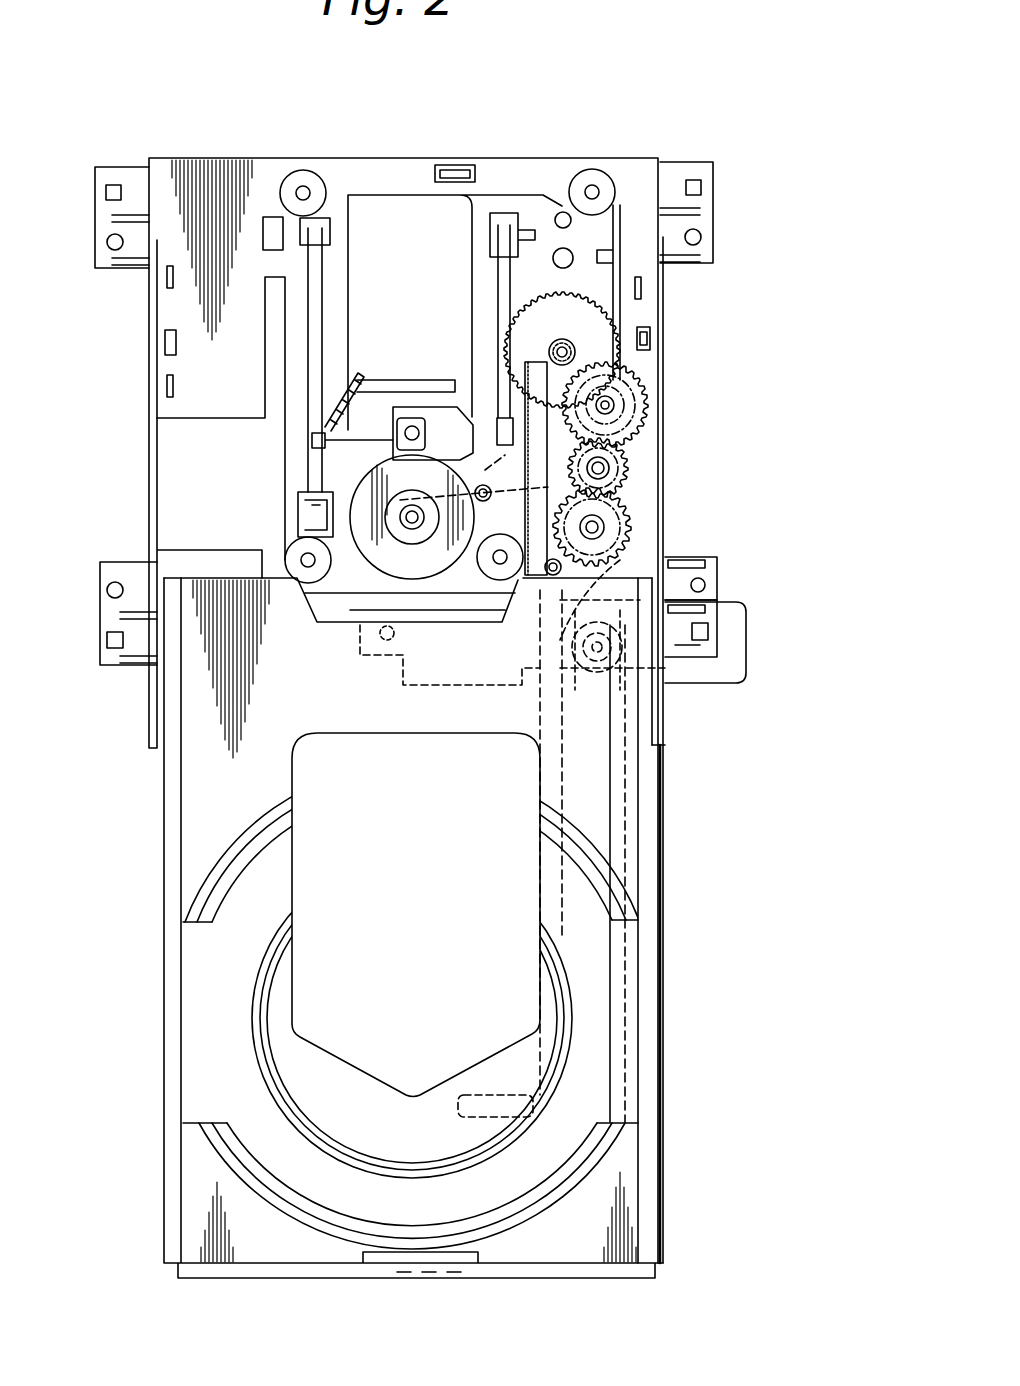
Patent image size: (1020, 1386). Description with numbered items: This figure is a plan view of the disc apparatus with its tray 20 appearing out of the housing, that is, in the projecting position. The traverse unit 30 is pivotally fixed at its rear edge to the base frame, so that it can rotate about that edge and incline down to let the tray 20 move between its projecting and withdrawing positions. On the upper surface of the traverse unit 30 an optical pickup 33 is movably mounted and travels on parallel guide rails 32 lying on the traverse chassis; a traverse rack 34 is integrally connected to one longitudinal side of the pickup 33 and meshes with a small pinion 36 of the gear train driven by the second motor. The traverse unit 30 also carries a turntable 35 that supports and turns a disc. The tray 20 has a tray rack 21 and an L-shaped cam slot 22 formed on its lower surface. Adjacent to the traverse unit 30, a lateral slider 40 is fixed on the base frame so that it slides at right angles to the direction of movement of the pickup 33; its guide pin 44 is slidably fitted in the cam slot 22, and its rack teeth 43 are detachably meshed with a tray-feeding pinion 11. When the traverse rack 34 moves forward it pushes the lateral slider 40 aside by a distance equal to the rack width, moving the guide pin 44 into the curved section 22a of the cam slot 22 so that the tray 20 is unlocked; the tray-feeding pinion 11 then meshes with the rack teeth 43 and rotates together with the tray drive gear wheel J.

The tray 20 is at (440, 872).
The tray rack 21 is at (600, 790).
The cam slot 22 is at (620, 950).
The curved section 22a is at (540, 1085).
The traverse unit 30 is at (409, 710).
The guide rails 32 is at (503, 277).
The optical pickup 33 is at (412, 418).
The traverse rack 34 is at (537, 372).
The turntable 35 is at (360, 493).
The small pinion 36 is at (567, 342).
The lateral slider 40 is at (737, 666).
The rack teeth 43 is at (715, 612).
The guide pin 44 is at (552, 605).
The tray-feeding pinion 11 is at (718, 582).
The tray drive gear wheel J is at (637, 548).